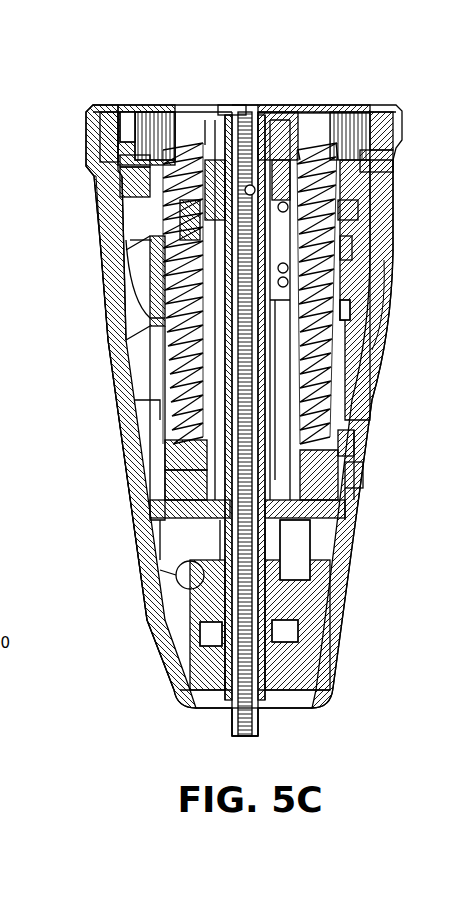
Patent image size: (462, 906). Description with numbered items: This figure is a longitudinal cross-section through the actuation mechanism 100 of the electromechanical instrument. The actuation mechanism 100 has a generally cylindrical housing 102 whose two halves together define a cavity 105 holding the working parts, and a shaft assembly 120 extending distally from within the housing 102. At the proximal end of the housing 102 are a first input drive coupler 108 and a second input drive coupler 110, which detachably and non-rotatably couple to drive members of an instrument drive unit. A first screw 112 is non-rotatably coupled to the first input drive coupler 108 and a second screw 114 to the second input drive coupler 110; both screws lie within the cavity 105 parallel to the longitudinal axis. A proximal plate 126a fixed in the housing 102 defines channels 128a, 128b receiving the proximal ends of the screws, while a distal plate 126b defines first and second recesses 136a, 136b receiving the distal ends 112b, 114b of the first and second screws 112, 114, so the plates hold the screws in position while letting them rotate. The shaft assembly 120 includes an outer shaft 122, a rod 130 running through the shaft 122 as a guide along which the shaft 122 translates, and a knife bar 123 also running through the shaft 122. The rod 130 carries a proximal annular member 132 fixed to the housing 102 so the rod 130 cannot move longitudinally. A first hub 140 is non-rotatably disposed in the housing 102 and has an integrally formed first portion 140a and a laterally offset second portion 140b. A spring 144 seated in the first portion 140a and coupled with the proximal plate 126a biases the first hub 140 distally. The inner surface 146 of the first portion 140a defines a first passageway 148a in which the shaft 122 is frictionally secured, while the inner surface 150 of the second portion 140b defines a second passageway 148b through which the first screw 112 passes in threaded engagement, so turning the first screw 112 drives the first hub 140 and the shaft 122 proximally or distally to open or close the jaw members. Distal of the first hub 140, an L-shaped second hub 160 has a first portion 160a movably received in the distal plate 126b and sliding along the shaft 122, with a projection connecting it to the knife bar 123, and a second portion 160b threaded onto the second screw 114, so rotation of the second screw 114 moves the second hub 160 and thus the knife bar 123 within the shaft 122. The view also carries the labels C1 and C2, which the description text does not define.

The actuation mechanism 100 is at (272, 66).
The housing 102 is at (381, 418).
The cavity 105 is at (104, 243).
The first input drive coupler 108 is at (342, 108).
The second input drive coupler 110 is at (167, 108).
The first screw 112 is at (368, 190).
The distal end of first screw 112b is at (354, 443).
The second screw 114 is at (165, 195).
The distal end of second screw 114b is at (175, 468).
The shaft assembly 120 is at (220, 715).
The shaft 122 is at (262, 716).
The longitudinal knife bar 123 is at (383, 372).
The proximal plate 126a is at (378, 170).
The distal plate 126b is at (362, 478).
The channel 128a is at (380, 108).
The channel 128b is at (160, 150).
The rod 130 is at (300, 706).
The annular member 132 is at (226, 108).
The first recess 136a is at (168, 510).
The second recess 136b is at (345, 512).
The first hub 140 is at (350, 281).
The first portion of first hub 140a is at (165, 318).
The second portion of first hub 140b is at (346, 248).
The spring 144 is at (280, 108).
The inner surface 146 is at (190, 240).
The first cylindrical passageway 148a is at (165, 190).
The second cylindrical passageway 148b is at (346, 222).
The inner surface 150 is at (348, 312).
The second hub 160 is at (172, 444).
The first portion of second hub 160a is at (163, 580).
The second portion of second hub 160b is at (158, 412).
The first chamber C1 is at (205, 170).
The second chamber C2 is at (170, 365).